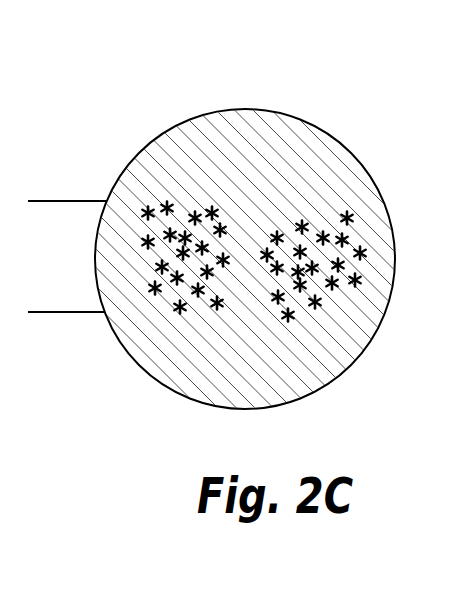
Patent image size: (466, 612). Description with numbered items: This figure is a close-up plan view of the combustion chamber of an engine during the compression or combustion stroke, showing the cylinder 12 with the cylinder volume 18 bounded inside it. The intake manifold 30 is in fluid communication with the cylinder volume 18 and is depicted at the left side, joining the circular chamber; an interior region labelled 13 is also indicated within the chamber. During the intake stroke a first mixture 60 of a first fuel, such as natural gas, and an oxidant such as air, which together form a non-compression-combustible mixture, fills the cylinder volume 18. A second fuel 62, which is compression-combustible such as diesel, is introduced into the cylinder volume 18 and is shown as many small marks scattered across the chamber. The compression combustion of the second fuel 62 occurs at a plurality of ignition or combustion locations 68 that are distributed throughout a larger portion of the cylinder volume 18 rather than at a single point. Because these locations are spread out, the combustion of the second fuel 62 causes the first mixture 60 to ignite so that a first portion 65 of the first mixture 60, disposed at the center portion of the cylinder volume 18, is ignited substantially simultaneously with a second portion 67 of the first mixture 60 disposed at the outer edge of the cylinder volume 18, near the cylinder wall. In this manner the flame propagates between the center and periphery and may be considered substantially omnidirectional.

The cylinder 12 is at (375, 133).
The surface region 13 is at (275, 178).
The cylinder volume 18 is at (158, 157).
The intake manifold 30 is at (76, 252).
The first mixture 60 is at (270, 116).
The second fuel 62 is at (351, 233).
The first portion 65 is at (240, 233).
The second portion 67 is at (313, 382).
The combustion locations 68 is at (178, 305).